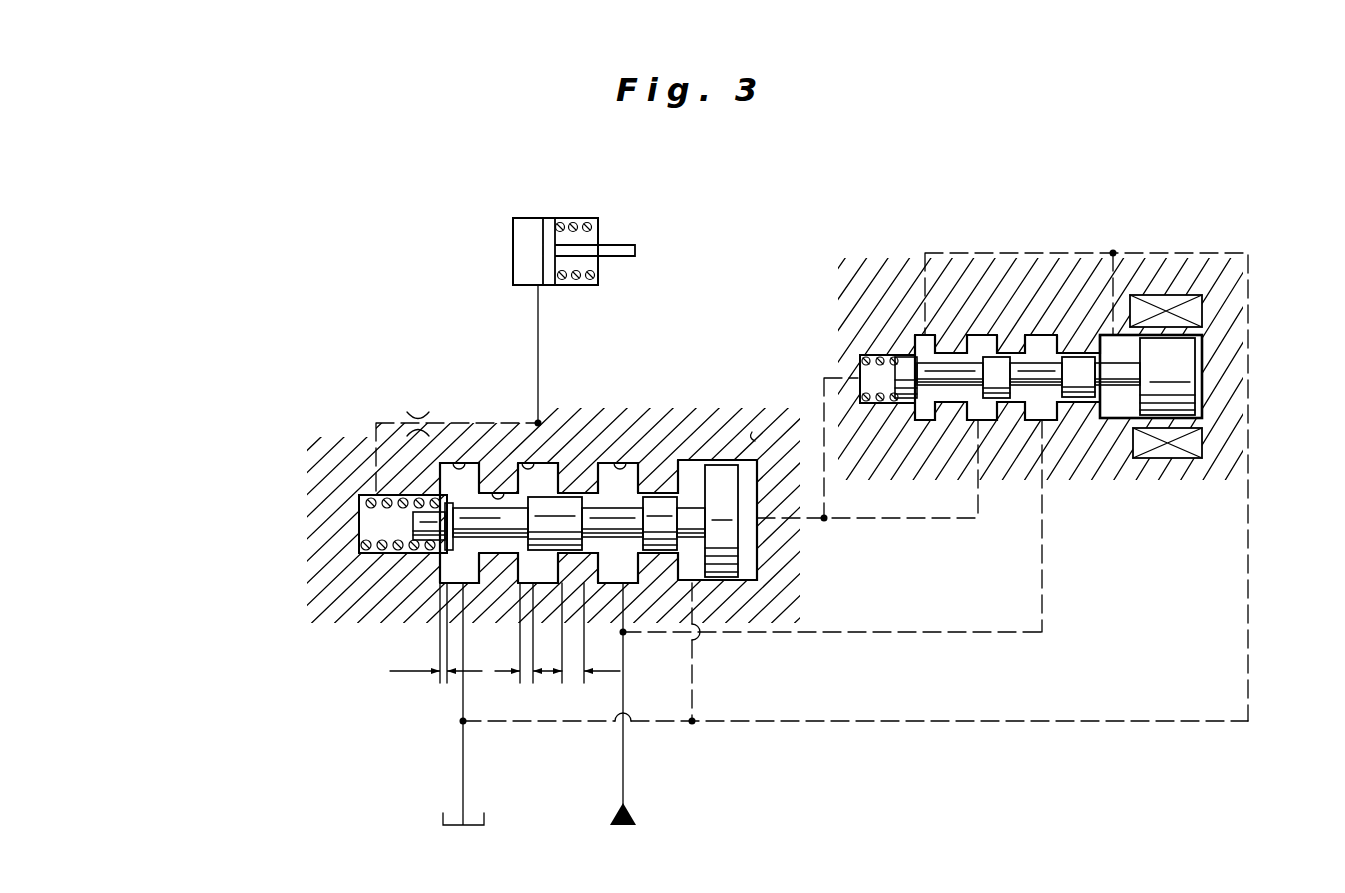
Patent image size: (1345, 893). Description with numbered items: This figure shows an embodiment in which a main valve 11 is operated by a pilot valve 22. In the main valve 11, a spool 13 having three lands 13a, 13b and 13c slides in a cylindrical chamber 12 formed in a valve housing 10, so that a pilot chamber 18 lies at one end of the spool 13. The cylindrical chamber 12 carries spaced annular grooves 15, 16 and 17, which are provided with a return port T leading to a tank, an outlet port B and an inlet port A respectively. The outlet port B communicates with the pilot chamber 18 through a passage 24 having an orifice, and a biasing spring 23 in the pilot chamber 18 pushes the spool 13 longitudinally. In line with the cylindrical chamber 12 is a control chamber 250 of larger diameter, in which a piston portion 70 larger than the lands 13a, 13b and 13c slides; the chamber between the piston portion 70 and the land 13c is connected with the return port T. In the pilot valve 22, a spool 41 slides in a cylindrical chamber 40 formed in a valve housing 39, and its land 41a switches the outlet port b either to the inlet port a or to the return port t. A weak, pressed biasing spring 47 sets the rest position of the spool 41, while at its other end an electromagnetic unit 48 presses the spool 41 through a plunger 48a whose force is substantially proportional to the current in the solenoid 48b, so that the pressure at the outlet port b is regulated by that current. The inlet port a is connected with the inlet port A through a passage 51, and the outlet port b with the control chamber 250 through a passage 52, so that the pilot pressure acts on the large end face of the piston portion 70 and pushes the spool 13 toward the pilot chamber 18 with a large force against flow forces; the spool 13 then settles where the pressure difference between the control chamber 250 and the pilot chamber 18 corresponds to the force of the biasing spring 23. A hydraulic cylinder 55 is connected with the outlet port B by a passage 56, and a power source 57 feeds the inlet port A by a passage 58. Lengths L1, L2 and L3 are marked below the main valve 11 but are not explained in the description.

The valve housing 10 is at (730, 488).
The main valve 11 is at (298, 450).
The cylindrical chamber 12 is at (497, 491).
The spool 13 is at (656, 500).
The land 13a is at (455, 485).
The land 13b is at (551, 477).
The land 13c is at (666, 506).
The annular groove 15 is at (458, 461).
The annular groove 16 is at (524, 461).
The annular groove 17 is at (620, 461).
The pilot chamber 18 is at (362, 520).
The pilot valve 22 is at (1007, 283).
The biasing spring 23 is at (375, 553).
The passage 24 is at (375, 449).
The valve housing 39 is at (1103, 447).
The cylindrical chamber 40 is at (1073, 362).
The spool 41 is at (1095, 337).
The land 41a is at (993, 366).
The biasing spring 47 is at (875, 356).
The electromagnetic unit 48 is at (1182, 284).
The plunger 48a is at (1175, 358).
The solenoid 48b is at (1197, 312).
The passage 51 is at (915, 634).
The passage 52 is at (928, 520).
The hydraulic cylinder 55 is at (528, 232).
The passage 56 is at (537, 308).
The power source 57 is at (640, 815).
The passage 58 is at (626, 757).
The piston portion 70 is at (752, 432).
The control chamber 250 is at (745, 548).
The inlet port A is at (628, 585).
The outlet port B is at (533, 461).
The return port T is at (463, 584).
The inlet port a is at (1046, 421).
The outlet port b is at (980, 421).
The return port t is at (917, 333).
The overlap length L1 is at (586, 633).
The overlap length L2 is at (436, 633).
The overlap length L3 is at (525, 633).